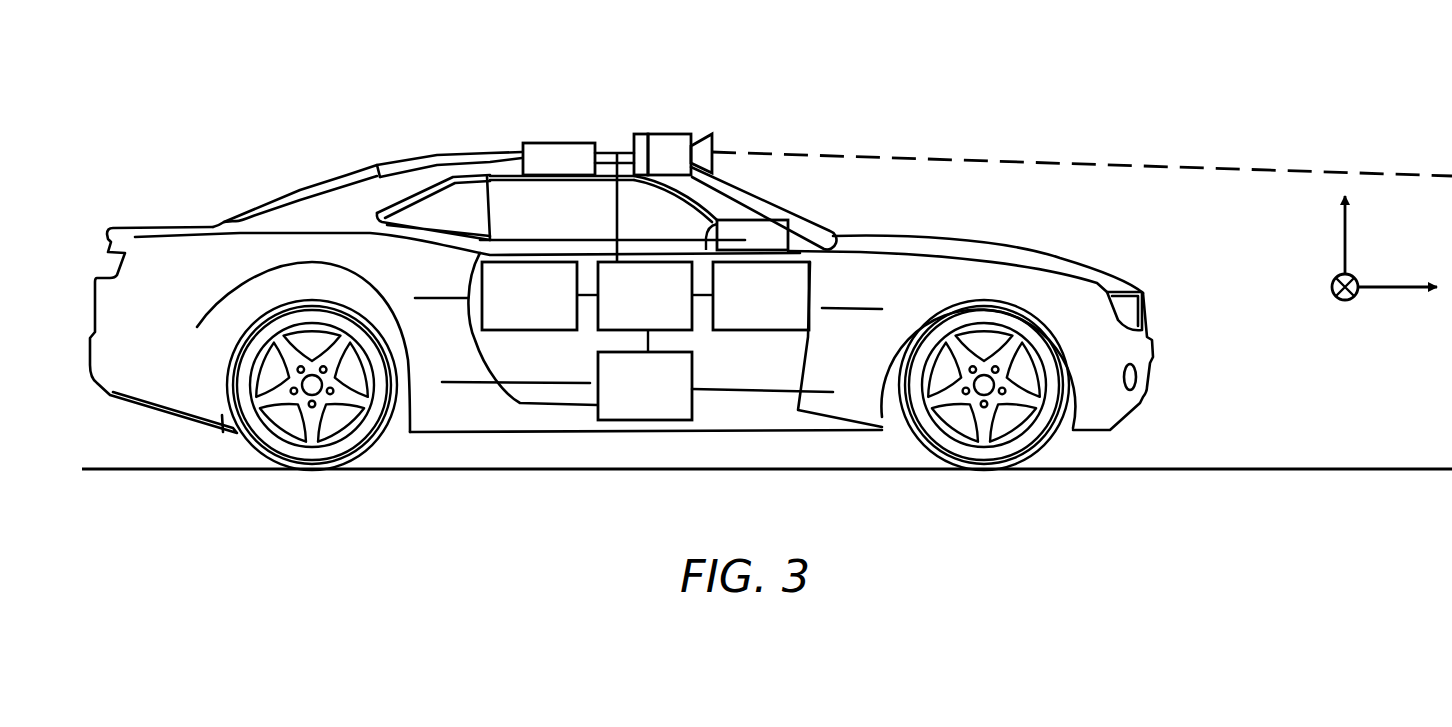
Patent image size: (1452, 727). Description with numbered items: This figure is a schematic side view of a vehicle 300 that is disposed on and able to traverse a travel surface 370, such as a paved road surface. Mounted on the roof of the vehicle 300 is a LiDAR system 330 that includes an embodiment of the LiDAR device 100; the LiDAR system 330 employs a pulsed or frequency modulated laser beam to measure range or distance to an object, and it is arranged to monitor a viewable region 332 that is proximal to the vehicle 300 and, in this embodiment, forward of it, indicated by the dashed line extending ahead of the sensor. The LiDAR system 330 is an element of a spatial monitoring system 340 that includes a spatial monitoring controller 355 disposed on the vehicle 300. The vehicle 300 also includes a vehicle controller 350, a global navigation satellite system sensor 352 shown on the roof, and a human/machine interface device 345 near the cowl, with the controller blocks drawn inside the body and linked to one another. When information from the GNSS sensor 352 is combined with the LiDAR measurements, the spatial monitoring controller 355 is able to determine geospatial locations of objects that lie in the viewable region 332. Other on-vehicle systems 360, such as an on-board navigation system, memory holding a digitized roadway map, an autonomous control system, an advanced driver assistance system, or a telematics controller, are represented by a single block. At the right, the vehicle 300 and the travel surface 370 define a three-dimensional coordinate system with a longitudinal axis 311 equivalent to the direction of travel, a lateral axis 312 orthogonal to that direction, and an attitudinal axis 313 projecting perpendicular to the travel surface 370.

The LiDAR device 100 is at (704, 128).
The vehicle 300 is at (1036, 236).
The longitudinal axis 311 is at (1403, 309).
The lateral axis 312 is at (1341, 305).
The attitudinal axis 313 is at (1319, 232).
The LiDAR system 330 is at (659, 130).
The viewable region 332 is at (904, 152).
The spatial monitoring system 340 is at (632, 138).
The human/machine interface (HMI) device 345 is at (795, 220).
The vehicle controller 350 is at (540, 296).
The GNSS sensor 352 is at (521, 144).
The spatial monitoring controller 355 is at (655, 296).
The other on-vehicle systems 360 is at (761, 296).
The travel surface 370 is at (1235, 467).